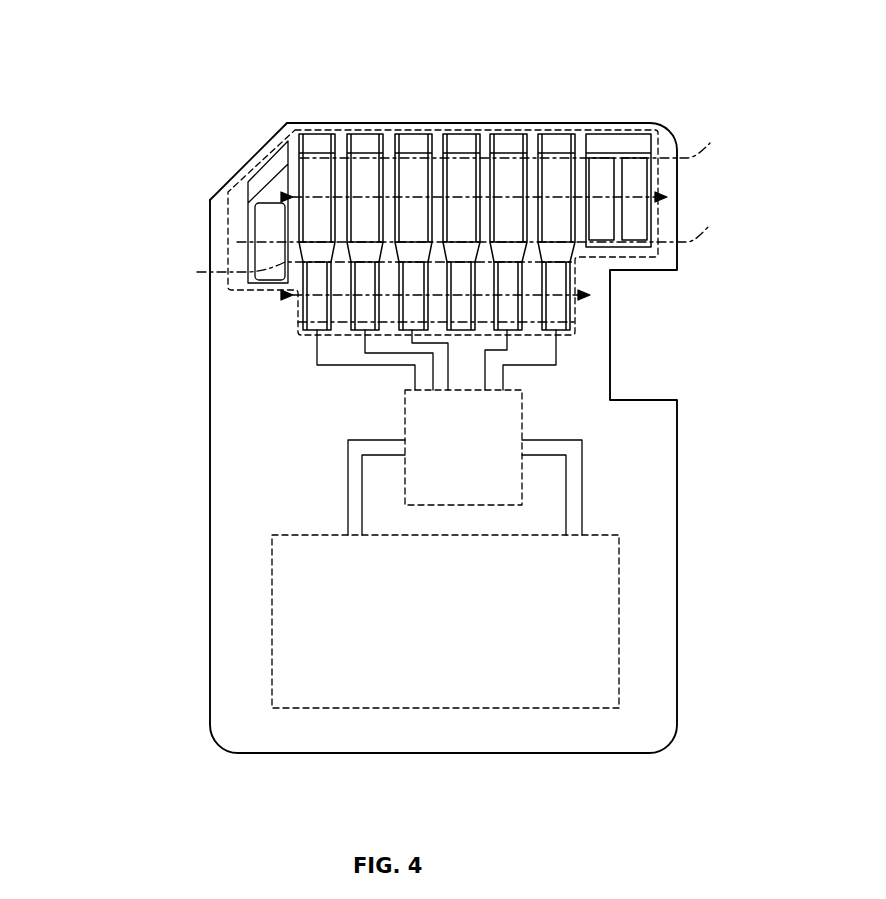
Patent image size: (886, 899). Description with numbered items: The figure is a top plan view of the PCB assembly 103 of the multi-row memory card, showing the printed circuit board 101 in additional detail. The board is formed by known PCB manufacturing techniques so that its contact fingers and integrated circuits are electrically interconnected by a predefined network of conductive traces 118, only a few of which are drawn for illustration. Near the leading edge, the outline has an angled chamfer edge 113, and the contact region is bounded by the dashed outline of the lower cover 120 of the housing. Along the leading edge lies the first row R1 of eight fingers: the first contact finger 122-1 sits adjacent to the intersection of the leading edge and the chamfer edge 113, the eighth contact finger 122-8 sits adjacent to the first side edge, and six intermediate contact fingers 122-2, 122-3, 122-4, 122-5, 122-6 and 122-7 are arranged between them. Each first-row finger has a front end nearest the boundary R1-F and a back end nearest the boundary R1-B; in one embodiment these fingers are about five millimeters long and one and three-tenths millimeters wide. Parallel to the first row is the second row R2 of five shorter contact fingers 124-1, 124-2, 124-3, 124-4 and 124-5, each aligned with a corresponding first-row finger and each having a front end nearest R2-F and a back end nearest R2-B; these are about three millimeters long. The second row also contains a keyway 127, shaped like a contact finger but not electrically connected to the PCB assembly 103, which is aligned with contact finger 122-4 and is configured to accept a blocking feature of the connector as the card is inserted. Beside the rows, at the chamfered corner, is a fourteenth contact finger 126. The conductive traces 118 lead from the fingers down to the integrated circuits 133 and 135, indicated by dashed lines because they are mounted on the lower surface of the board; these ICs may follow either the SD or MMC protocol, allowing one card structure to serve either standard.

The printed circuit board 101 is at (210, 553).
The PCB assembly 103 is at (139, 64).
The chamfer edge 113 is at (270, 141).
The conductive traces 118 is at (384, 370).
The lower cover 120 is at (348, 128).
The first contact finger 122-1 is at (318, 167).
The intermediate contact finger 122-2 is at (365, 167).
The intermediate contact finger 122-3 is at (413, 167).
The intermediate contact finger 122-4 is at (460, 167).
The intermediate contact finger 122-5 is at (507, 167).
The intermediate contact finger 122-6 is at (555, 167).
The intermediate contact finger 122-7 is at (600, 167).
The eighth contact finger 122-8 is at (635, 167).
The second row contact finger 124-1 is at (317, 310).
The second row contact finger 124-2 is at (364, 312).
The second row contact finger 124-3 is at (407, 308).
The second row contact finger 124-4 is at (458, 317).
The second row contact finger 124-5 is at (549, 300).
The fourteenth contact finger 126 is at (265, 227).
The keyway 127 is at (510, 313).
The integrated circuit 133 is at (495, 437).
The integrated circuit 135 is at (466, 669).
The first row R1 is at (280, 195).
The first row front R1-F is at (530, 144).
The first row back R1-B is at (499, 227).
The second row R2 is at (283, 298).
The second row front R2-F is at (357, 272).
The second row back R2-B is at (298, 325).